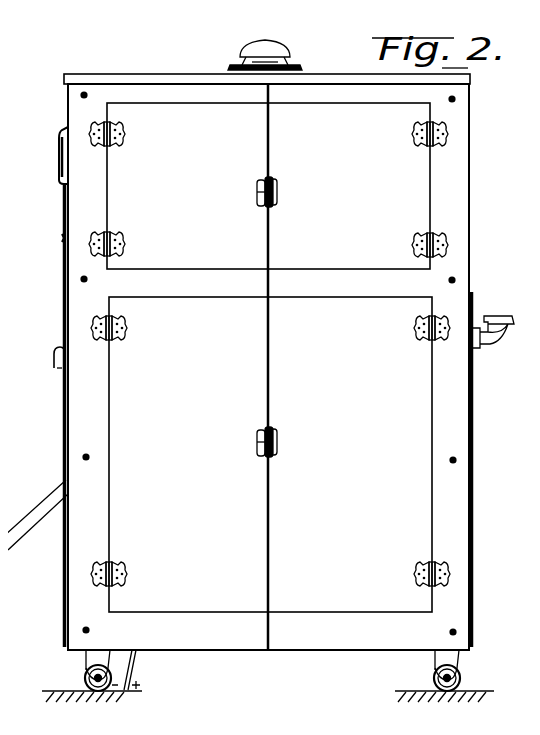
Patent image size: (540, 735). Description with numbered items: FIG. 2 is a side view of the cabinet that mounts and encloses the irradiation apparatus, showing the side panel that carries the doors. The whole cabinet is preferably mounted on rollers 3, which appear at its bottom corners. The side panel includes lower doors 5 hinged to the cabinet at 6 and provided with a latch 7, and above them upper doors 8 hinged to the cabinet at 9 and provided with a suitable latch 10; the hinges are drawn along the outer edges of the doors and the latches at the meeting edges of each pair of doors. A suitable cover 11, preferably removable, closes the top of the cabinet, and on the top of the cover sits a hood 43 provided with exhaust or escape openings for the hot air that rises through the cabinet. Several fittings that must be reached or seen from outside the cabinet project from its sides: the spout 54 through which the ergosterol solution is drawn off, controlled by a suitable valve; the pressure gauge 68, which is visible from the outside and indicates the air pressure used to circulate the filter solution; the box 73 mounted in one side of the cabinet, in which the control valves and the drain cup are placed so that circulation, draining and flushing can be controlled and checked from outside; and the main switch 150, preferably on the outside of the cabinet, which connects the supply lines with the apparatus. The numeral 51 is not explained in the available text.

The rollers 3 is at (80, 674).
The lower doors 5 is at (184, 516).
The hinges of lower doors 6 is at (89, 572).
The latch 7 is at (278, 446).
The upper doors 8 is at (217, 258).
The hinges of upper doors 9 is at (446, 132).
The latch 10 is at (280, 194).
The cover 11 is at (158, 68).
The hood 43 is at (285, 52).
The faucet 51 is at (496, 342).
The spout 54 is at (52, 359).
The pressure gauge 68 is at (56, 174).
The box 73 is at (26, 514).
The main switch 150 is at (60, 237).